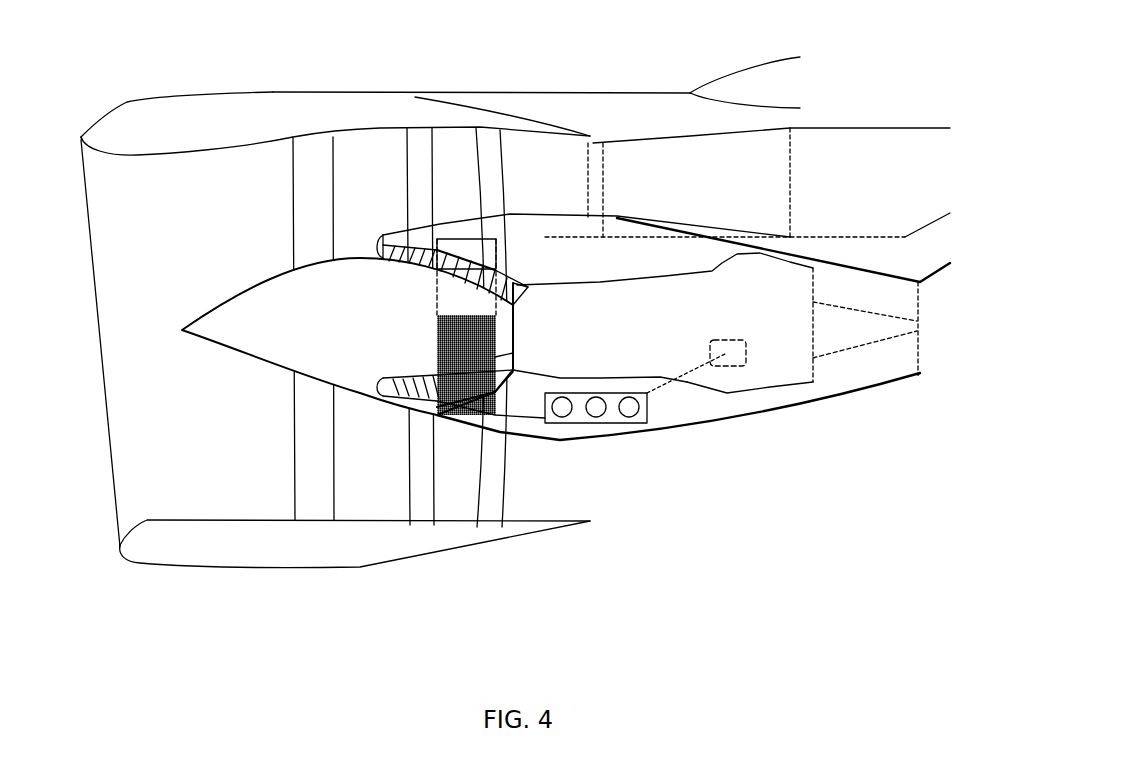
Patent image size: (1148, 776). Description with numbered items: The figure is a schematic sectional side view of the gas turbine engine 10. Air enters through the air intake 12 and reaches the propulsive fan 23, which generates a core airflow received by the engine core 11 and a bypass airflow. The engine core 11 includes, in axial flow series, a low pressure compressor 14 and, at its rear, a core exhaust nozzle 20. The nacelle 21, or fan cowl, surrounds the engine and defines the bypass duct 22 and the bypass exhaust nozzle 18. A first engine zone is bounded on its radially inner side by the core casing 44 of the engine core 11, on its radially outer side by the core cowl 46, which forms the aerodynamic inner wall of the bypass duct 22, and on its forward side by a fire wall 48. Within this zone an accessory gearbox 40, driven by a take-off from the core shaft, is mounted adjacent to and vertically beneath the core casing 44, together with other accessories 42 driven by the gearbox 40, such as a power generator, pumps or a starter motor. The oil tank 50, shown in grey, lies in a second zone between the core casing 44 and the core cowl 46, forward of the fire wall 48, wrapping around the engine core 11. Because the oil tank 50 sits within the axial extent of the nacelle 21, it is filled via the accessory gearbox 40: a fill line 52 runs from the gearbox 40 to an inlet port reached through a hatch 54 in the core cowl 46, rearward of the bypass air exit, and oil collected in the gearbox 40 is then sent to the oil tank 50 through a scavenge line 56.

The gas turbine engine 10 is at (227, 77).
The engine core 11 is at (665, 250).
The air intake 12 is at (130, 238).
The low pressure compressor 14 is at (425, 402).
The bypass exhaust nozzle 18 is at (545, 237).
The core exhaust nozzle 20 is at (877, 293).
The nacelle 21 is at (282, 94).
The bypass duct 22 is at (457, 327).
The propulsive fan 23 is at (291, 188).
The accessory gearbox 40 is at (530, 403).
The other accessories 42 is at (562, 417).
The core casing 44 is at (740, 393).
The core cowl 46 is at (621, 216).
The fire wall 48 is at (505, 237).
The oil tank 50 is at (437, 305).
The fill line 52 is at (670, 388).
The hatch 54 is at (728, 340).
The scavenge line 56 is at (497, 418).